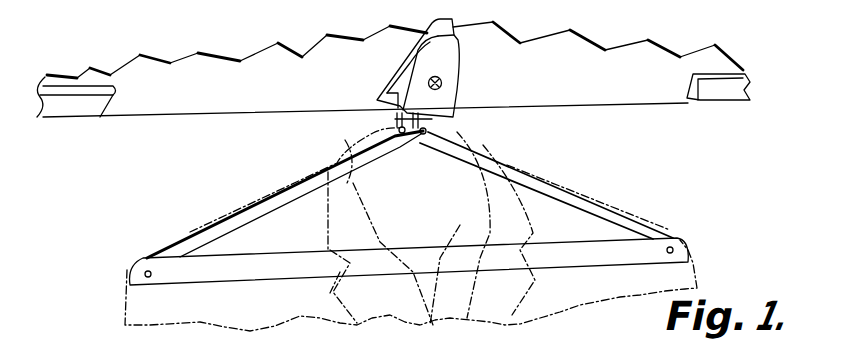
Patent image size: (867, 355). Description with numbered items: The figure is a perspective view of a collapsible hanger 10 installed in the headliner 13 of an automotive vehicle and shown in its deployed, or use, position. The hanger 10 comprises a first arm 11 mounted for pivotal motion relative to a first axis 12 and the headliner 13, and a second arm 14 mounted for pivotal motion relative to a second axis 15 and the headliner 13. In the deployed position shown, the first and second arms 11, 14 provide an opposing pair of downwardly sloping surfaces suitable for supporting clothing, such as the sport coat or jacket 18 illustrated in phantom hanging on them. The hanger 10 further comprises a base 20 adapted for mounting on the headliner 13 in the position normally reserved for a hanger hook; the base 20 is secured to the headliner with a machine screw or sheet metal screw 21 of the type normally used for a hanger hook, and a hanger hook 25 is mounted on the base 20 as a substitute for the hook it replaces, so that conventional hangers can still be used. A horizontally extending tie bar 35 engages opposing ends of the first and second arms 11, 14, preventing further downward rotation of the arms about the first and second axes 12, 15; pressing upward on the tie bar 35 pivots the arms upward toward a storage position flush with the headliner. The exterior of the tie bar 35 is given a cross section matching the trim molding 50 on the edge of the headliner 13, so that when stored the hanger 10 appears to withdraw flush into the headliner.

The collapsible hanger 10 is at (603, 177).
The first arm 11 is at (267, 211).
The first axis 12 is at (398, 128).
The headliner of the vehicle 13 is at (590, 57).
The second arm 14 is at (606, 218).
The second axis 15 is at (440, 130).
The sport coat or jacket 18 is at (330, 302).
The base 20 is at (422, 58).
The screw 21 is at (447, 84).
The hanger hook 25 is at (404, 80).
The tie bar 35 is at (462, 216).
The trim molding 50 is at (722, 88).